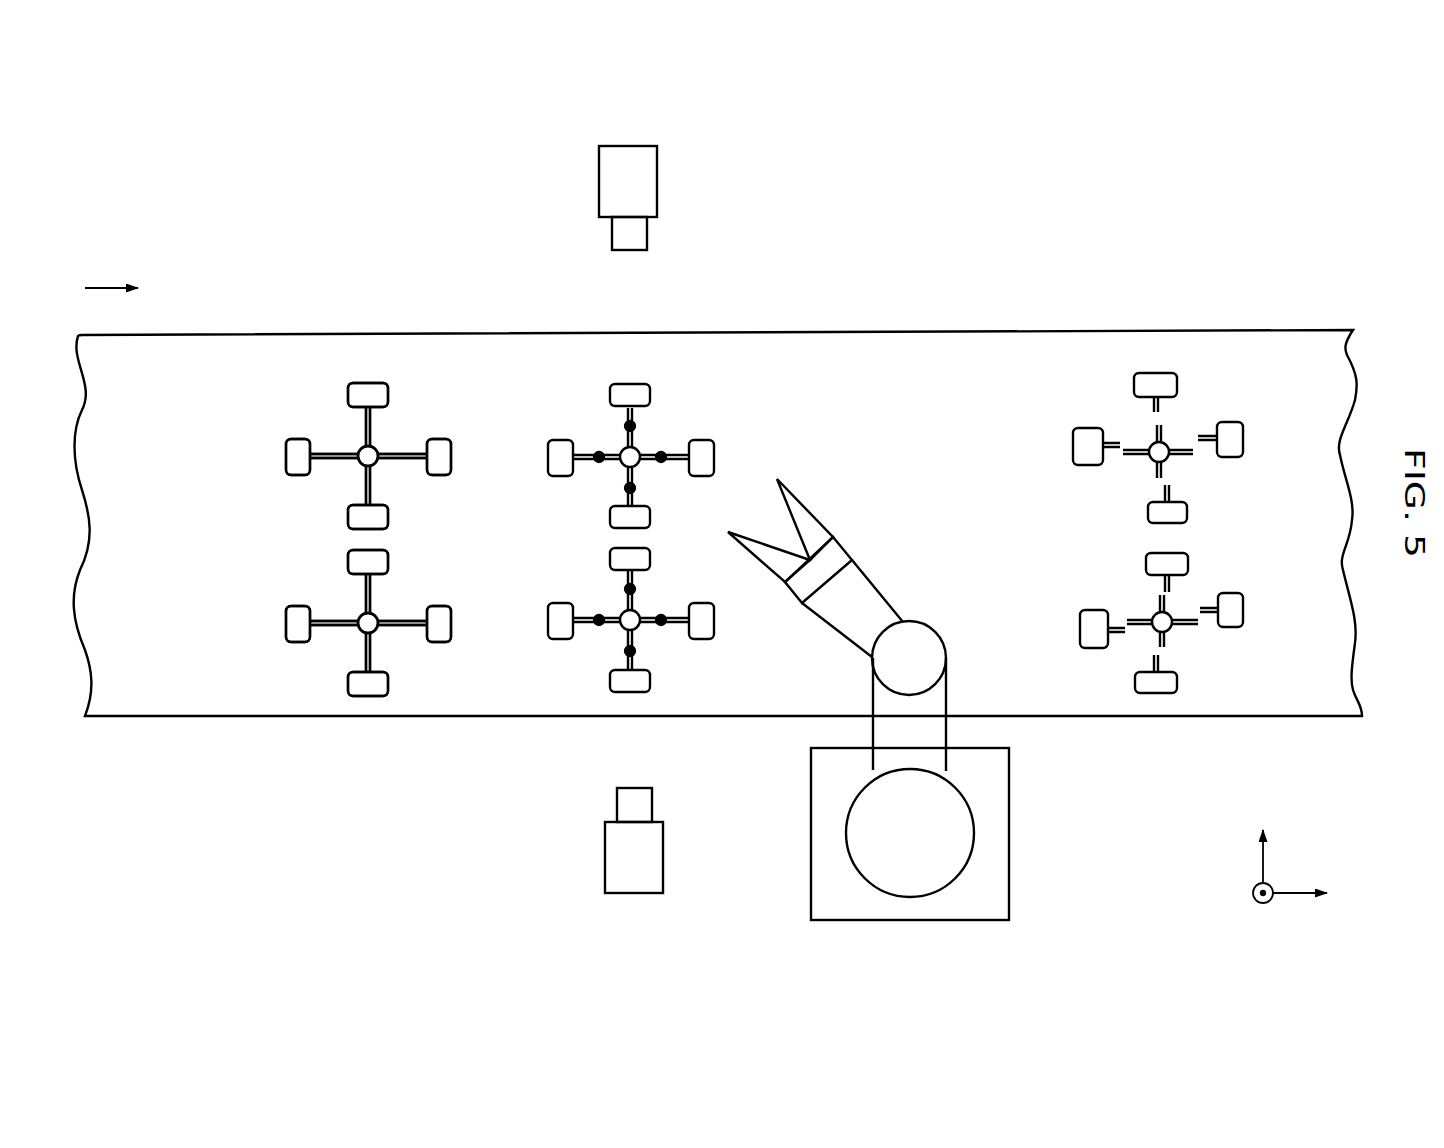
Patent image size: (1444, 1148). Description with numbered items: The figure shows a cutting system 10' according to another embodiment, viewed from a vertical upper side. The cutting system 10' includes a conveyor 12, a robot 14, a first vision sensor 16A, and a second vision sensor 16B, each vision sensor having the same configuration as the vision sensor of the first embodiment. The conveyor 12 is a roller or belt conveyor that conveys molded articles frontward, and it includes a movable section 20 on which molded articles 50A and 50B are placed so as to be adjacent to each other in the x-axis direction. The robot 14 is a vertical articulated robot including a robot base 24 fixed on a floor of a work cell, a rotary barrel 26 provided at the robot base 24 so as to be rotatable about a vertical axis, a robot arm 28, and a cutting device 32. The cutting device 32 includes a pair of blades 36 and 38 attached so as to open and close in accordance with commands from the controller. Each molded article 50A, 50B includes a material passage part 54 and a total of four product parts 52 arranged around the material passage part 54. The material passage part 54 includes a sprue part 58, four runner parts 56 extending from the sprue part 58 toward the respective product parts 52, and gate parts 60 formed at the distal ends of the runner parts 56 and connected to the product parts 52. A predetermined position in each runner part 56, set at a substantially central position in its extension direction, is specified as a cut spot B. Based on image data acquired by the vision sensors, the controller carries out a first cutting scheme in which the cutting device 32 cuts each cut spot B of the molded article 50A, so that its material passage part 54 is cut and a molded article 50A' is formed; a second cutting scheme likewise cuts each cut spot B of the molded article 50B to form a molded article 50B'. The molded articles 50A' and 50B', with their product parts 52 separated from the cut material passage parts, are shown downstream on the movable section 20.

The cutting system 10' is at (718, 503).
The conveyor 12 is at (1190, 732).
The robot 14 is at (1033, 870).
The first vision sensor 16A is at (612, 173).
The second vision sensor 16B is at (618, 866).
The movable section 20 is at (1018, 693).
The robot base 24 is at (1002, 798).
The rotary barrel 26 is at (863, 847).
The robot arm 28 is at (930, 607).
The cutting device 32 is at (807, 460).
The blade 36 is at (773, 570).
The blade 38 is at (815, 527).
The molded article 50A is at (447, 443).
The molded article 50B is at (457, 630).
The molded article 50A' is at (1195, 445).
The molded article 50B' is at (1196, 629).
The product part 52 is at (357, 388).
The material passage part 54 is at (315, 432).
The runner part 56 is at (365, 430).
The sprue part 58 is at (380, 443).
The gate part 60 is at (368, 398).
The cut spot B is at (598, 452).